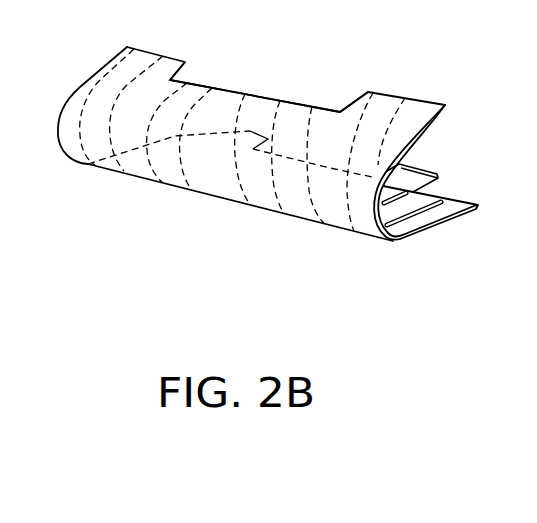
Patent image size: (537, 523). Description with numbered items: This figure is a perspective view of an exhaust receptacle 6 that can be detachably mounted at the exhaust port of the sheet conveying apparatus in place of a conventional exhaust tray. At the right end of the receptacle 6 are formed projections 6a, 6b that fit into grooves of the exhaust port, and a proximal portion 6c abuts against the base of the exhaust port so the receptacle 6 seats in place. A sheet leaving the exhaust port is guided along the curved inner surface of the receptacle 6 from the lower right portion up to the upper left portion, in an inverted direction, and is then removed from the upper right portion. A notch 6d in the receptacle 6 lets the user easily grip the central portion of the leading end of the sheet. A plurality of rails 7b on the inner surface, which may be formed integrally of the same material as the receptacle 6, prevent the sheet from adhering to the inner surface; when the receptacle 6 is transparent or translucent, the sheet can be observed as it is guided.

The exhaust receptacle 6 is at (236, 202).
The projection 6a is at (254, 145).
The projection 6b is at (412, 178).
The proximal portion 6c is at (467, 218).
The notch 6d is at (311, 101).
The rails 7b is at (420, 222).